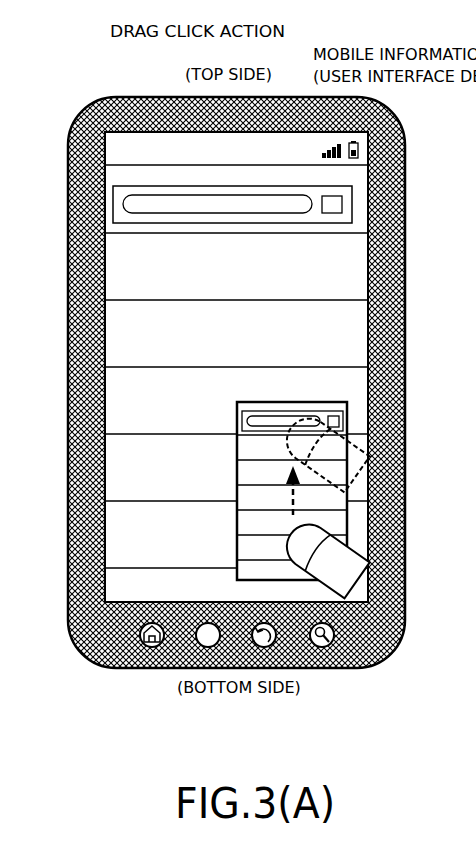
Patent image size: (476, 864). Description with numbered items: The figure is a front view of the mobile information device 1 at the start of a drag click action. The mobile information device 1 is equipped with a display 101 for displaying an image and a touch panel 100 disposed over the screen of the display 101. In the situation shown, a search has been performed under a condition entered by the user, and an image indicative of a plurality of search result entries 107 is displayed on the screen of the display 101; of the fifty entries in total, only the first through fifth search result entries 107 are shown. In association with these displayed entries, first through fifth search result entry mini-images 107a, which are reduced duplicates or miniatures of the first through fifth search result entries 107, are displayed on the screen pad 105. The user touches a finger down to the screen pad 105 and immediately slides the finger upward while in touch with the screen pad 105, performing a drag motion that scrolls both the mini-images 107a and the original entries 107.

The mobile information device 1 is at (279, 97).
The touch panel 100 is at (148, 590).
The display 101 is at (303, 586).
The screen pad 105 is at (318, 402).
The search result entries 107 is at (118, 465).
The search result entry mini-images 107a is at (340, 530).